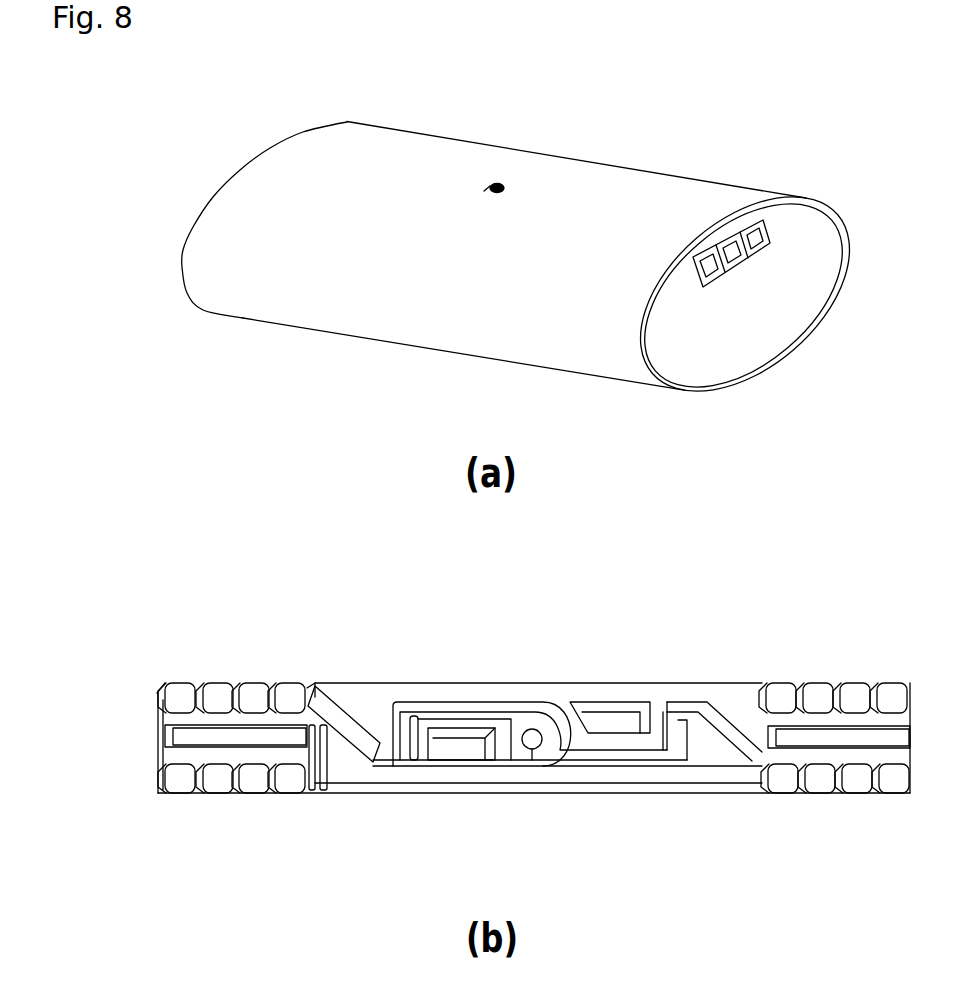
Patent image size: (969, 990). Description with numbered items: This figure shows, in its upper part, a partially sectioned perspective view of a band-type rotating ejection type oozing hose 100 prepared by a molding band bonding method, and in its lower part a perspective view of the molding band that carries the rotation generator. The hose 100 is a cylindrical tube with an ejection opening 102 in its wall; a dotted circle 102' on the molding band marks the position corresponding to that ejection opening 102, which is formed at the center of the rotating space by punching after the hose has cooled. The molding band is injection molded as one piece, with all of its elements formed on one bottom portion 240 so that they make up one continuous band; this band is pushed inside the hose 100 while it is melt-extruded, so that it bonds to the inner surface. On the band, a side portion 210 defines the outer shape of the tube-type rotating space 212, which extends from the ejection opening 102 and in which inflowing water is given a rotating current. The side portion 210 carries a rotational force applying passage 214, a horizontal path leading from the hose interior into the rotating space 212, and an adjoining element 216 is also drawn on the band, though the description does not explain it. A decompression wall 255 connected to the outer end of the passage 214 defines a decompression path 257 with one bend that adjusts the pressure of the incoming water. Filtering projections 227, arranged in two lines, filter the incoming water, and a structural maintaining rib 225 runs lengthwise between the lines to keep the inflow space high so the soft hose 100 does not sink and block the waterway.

The hose 100 is at (600, 182).
The ejection opening 102 is at (507, 140).
The dotted circle 102' is at (519, 790).
The bottom portion 240 is at (770, 251).
The side portion 210 is at (463, 690).
The rotating space 212 is at (560, 766).
The rotational force applying passage 214 is at (633, 752).
The radiator pattern 216 is at (615, 722).
The structural maintaining rib 225 is at (190, 737).
The filtering projection 227 is at (248, 690).
The decompression wall 255 is at (360, 703).
The decompression path 257 is at (400, 763).